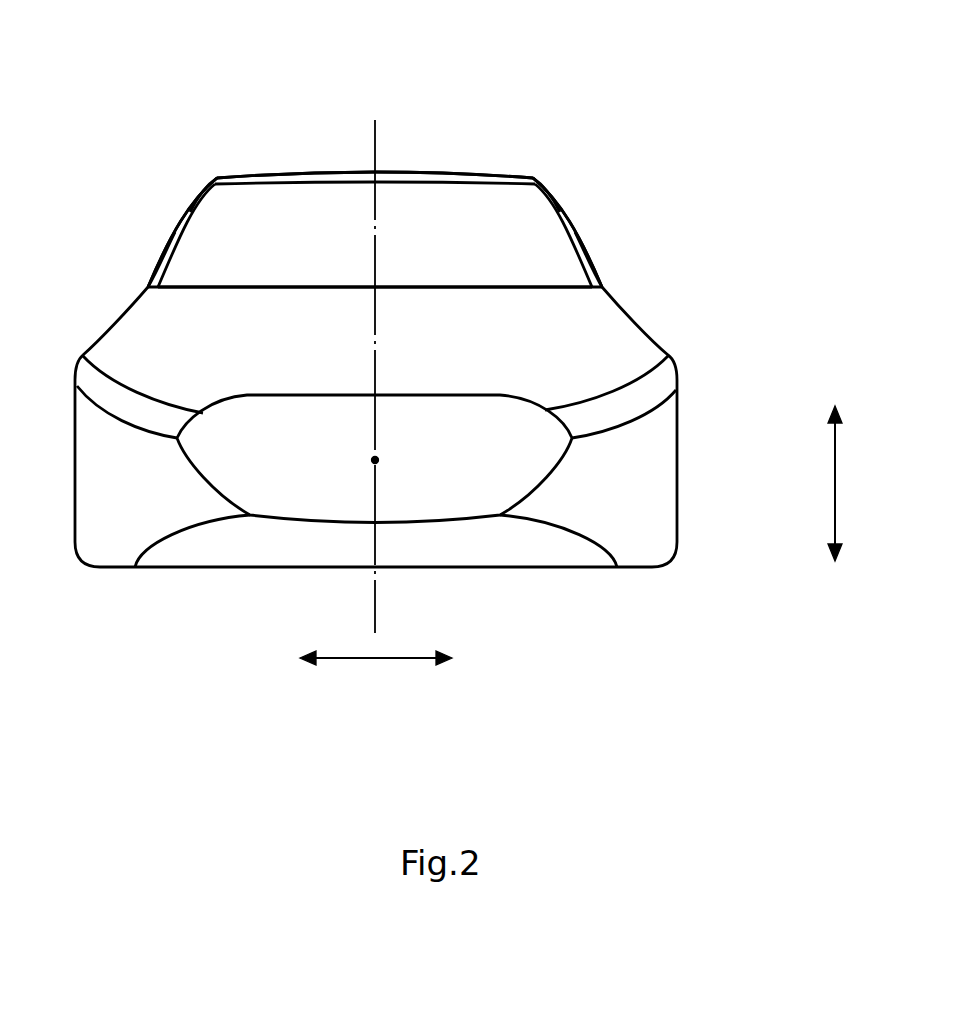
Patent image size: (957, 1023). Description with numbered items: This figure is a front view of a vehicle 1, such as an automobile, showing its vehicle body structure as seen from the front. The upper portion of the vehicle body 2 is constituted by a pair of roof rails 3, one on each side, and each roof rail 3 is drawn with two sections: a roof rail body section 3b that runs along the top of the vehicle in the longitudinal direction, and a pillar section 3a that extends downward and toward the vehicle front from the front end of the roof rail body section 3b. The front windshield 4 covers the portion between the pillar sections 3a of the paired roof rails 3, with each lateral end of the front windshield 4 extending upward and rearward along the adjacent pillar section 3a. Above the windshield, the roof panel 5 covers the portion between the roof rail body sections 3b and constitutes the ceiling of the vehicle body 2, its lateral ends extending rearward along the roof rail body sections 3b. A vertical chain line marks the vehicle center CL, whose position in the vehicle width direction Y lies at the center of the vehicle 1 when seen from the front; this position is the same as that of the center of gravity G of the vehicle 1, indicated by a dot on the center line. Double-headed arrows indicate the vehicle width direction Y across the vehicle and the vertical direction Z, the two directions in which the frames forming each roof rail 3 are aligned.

The vehicle 1 is at (672, 110).
The vehicle body 2 is at (660, 473).
The roof rail 3 is at (165, 238).
The pillar section 3a is at (158, 251).
The roof rail body section 3b is at (213, 174).
The front windshield 4 is at (523, 228).
The roof panel 5 is at (424, 172).
The center of gravity G is at (375, 462).
The vehicle center CL is at (378, 597).
The vehicle width direction Y is at (376, 675).
The vertical direction Z is at (847, 483).